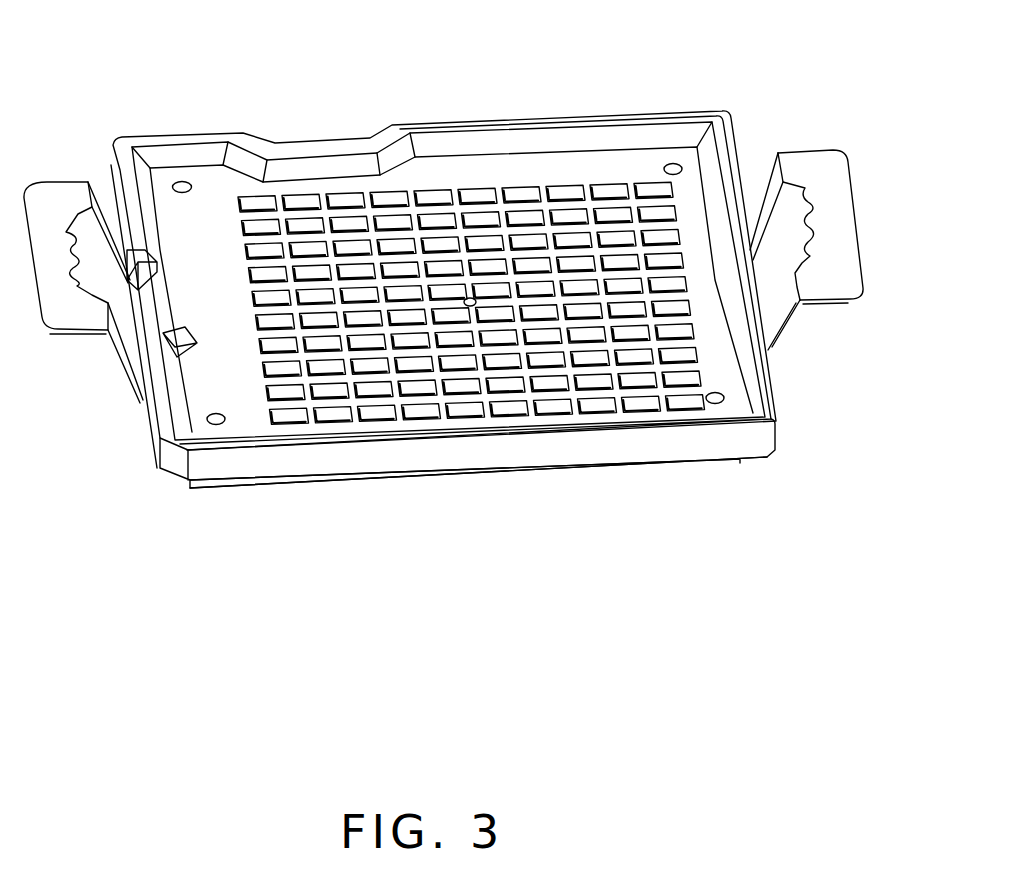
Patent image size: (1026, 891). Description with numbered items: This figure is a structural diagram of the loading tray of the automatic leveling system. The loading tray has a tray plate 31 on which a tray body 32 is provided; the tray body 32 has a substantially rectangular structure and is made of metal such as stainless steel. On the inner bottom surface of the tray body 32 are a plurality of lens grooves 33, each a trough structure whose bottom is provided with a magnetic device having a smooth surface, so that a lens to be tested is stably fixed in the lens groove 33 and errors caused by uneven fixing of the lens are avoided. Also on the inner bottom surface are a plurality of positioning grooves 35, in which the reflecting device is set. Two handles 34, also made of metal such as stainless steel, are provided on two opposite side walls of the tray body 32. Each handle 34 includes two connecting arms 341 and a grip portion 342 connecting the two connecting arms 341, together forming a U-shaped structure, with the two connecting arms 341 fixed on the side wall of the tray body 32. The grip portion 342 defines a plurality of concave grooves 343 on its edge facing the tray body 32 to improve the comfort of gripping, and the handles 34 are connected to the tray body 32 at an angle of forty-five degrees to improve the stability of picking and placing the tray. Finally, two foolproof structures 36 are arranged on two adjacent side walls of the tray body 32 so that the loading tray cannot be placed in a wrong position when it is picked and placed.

The tray plate 31 is at (210, 487).
The tray body 32 is at (648, 443).
The lens grooves 33 is at (462, 387).
The handles 34 is at (468, 203).
The connecting arms 341 is at (759, 198).
The grip portion 342 is at (838, 197).
The concave grooves 343 is at (808, 190).
The positioning grooves 35 is at (180, 182).
The foolproof structures 36 is at (330, 145).